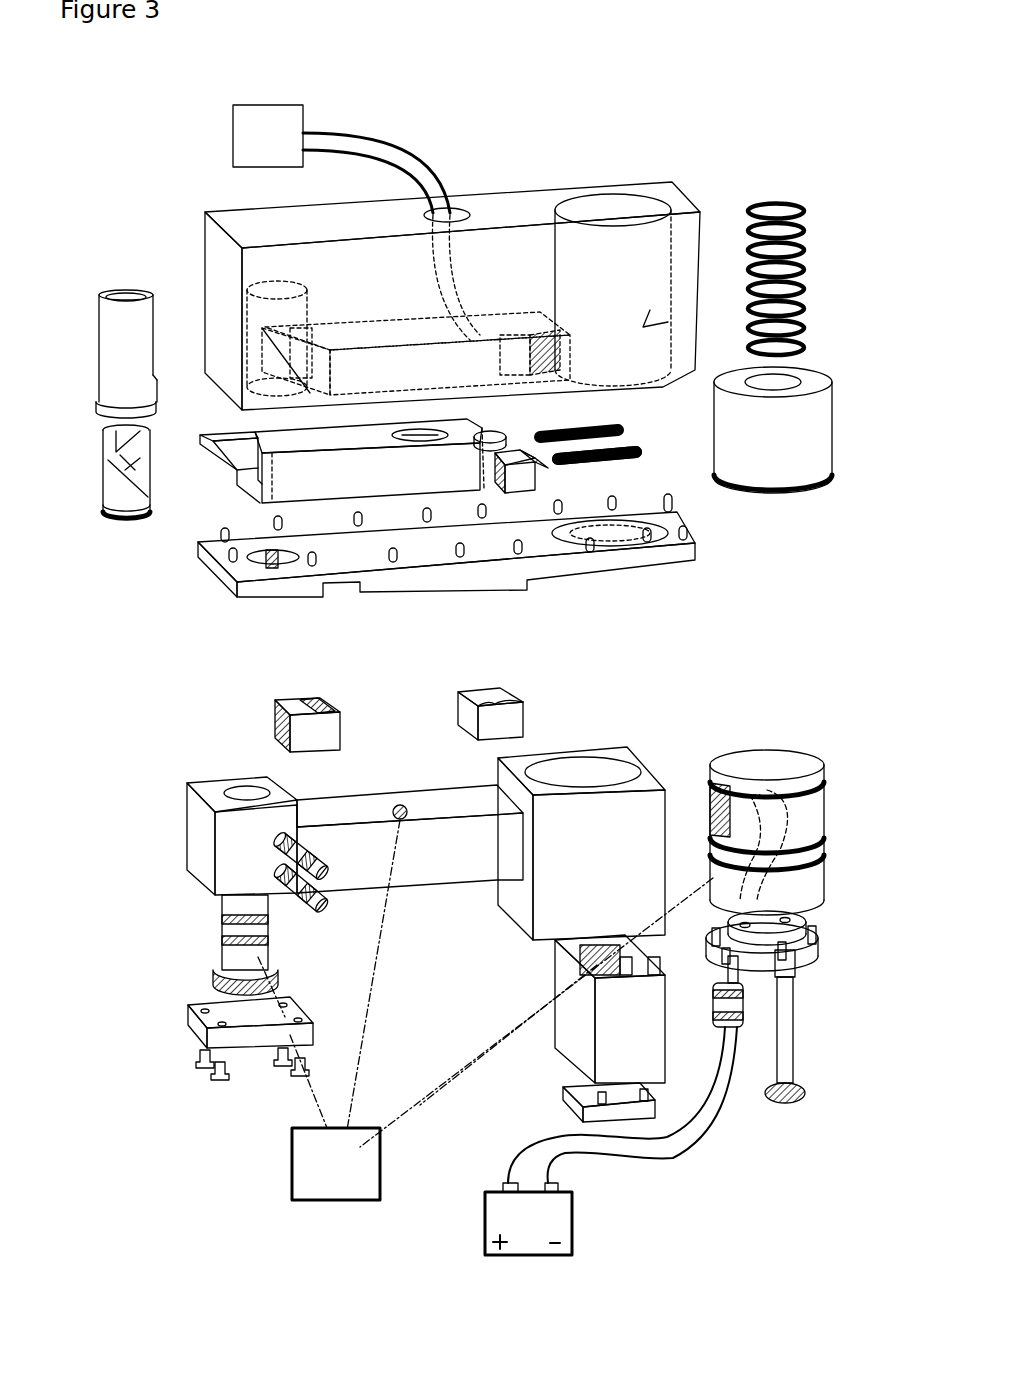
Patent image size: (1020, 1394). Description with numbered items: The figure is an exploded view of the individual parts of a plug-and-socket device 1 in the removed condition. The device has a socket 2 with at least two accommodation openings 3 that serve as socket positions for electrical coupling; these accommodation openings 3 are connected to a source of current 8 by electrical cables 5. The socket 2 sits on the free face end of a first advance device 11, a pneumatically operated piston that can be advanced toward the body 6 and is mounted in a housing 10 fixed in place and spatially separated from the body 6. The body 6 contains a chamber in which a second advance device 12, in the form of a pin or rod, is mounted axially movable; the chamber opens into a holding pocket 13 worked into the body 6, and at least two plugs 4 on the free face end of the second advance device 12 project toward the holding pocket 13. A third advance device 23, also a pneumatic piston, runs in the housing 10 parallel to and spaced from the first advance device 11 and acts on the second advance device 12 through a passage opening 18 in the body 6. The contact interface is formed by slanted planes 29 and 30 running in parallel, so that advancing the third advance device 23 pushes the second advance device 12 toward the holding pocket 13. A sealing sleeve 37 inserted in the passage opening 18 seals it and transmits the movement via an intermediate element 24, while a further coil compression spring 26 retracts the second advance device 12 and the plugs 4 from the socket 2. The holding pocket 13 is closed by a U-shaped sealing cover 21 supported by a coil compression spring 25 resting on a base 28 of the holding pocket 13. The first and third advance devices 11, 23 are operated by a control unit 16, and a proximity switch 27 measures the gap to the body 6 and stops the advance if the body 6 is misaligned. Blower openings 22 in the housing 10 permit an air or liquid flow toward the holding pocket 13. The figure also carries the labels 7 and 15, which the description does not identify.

The plug-and-socket device 1 is at (512, 112).
The socket 2 is at (730, 797).
The accommodation openings 3 is at (772, 793).
The plugs 4 is at (522, 477).
The electrical cables 5 is at (345, 132).
The body 6 is at (247, 222).
The motor 7 is at (242, 138).
The source of current 8 is at (507, 1217).
The housing 10 is at (248, 858).
The first advance device 11 is at (834, 1102).
The second advance device 12 is at (290, 472).
The holding pocket 13 is at (650, 310).
The solenoid 15 is at (787, 765).
The control unit 16 is at (622, 436).
The passage opening 18 is at (308, 318).
The sealing cover 21 is at (817, 423).
The blower openings 22 is at (275, 720).
The third advance device 23 is at (232, 955).
The intermediate element 24 is at (105, 436).
The coil compression spring 25 is at (800, 205).
The further coil compression spring 26 is at (560, 463).
The proximity switch 27 is at (402, 820).
The base 28 is at (604, 196).
The slanted plane 29 is at (135, 455).
The slanted plane 30 is at (113, 517).
The sealing sleeve 37 is at (125, 372).